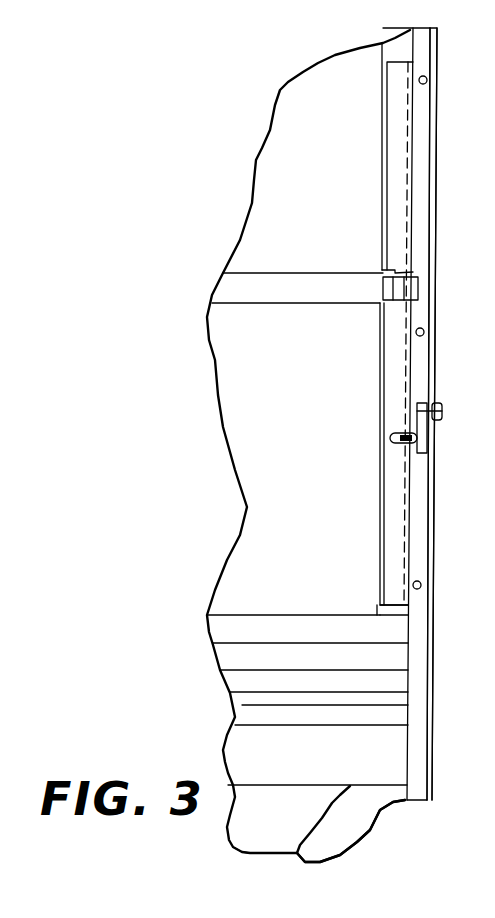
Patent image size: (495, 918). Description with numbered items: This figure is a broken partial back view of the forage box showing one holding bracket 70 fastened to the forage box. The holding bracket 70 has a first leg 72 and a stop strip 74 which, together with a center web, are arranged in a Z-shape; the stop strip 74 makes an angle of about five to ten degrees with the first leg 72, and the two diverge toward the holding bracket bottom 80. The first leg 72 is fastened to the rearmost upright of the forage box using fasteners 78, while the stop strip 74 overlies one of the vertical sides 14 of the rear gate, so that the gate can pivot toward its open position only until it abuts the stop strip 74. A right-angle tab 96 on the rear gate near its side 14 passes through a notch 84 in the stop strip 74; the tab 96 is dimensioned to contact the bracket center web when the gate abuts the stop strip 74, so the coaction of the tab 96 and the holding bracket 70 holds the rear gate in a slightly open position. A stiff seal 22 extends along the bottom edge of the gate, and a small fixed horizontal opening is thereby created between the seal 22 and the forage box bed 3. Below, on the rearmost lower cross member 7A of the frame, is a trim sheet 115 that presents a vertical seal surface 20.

The vertical sides 14 is at (410, 48).
The fasteners 78 is at (428, 80).
The right-angle tab 96 is at (416, 284).
The notch 84 is at (382, 301).
The holding bracket 70 is at (368, 378).
The first leg 72 is at (418, 498).
The stop strip 74 is at (392, 527).
The holding bracket bottom 80 is at (412, 610).
The stiff seal 22 is at (233, 678).
The bed 3 is at (393, 718).
The trim sheet 115 is at (250, 797).
The vertical seal surface 20 is at (247, 835).
The rearmost lower cross member 7A is at (368, 815).